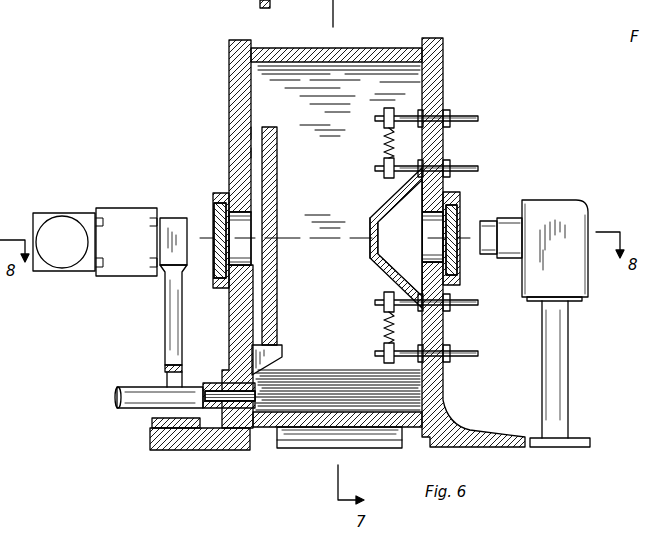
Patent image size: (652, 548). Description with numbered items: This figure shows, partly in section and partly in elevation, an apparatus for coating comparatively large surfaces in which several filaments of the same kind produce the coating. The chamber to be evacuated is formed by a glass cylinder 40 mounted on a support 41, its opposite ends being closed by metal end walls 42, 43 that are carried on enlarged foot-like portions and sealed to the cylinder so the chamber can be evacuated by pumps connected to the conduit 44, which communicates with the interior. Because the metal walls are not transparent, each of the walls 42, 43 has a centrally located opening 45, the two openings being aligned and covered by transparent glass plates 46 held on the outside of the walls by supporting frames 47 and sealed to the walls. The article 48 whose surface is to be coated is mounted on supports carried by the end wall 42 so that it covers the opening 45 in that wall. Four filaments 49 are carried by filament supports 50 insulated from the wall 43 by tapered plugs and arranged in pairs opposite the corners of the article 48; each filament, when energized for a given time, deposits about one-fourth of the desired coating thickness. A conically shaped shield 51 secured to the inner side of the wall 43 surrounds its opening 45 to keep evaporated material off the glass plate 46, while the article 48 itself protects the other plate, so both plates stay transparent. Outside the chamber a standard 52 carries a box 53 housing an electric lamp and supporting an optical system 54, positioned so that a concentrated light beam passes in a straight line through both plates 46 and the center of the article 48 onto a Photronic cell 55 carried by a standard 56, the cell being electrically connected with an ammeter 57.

The glass cylinder 40 is at (375, 50).
The support 41 is at (318, 432).
The end wall 42 is at (229, 100).
The end wall 43 is at (443, 92).
The conduit 44 is at (148, 387).
The opening 45 is at (240, 248).
The glass plate 46 is at (220, 275).
The supporting frame 47 is at (213, 200).
The article 48 is at (277, 218).
The filament 49 is at (384, 144).
The filament support 50 is at (465, 165).
The conically shaped shield 51 is at (378, 262).
The standard 52 is at (560, 370).
The box 53 is at (577, 215).
The optical system 54 is at (500, 218).
The Photronic cell 55 is at (172, 218).
The standard 56 is at (170, 324).
The ammeter 57 is at (65, 213).